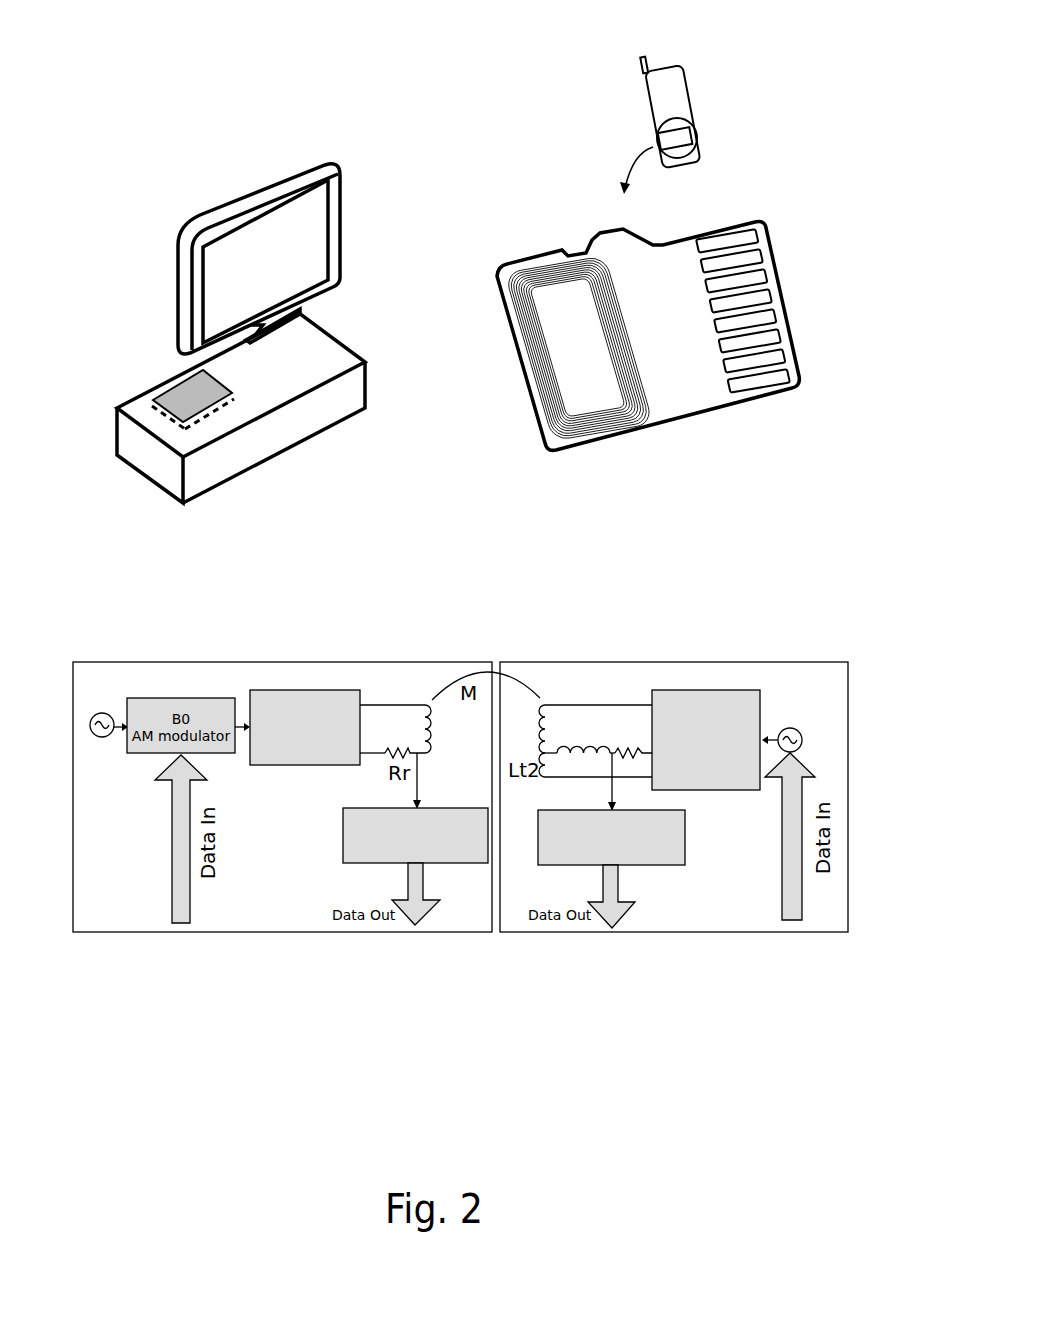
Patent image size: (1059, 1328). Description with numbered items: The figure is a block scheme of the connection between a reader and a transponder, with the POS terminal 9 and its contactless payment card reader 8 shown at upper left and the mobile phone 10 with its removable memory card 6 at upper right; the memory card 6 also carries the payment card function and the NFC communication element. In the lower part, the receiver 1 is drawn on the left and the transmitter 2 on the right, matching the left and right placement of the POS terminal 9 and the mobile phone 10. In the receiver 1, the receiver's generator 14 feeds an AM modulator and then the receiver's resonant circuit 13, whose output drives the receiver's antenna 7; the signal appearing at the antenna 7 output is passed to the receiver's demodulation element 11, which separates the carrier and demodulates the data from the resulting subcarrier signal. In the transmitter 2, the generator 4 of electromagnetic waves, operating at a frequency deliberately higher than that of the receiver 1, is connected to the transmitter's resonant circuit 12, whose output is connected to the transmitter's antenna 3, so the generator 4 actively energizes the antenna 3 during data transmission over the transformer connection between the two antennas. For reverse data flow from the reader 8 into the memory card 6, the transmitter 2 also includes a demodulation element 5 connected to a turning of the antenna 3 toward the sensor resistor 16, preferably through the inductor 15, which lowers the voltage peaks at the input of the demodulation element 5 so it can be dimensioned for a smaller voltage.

The receiver 1 is at (142, 933).
The transmitter 2 is at (547, 933).
The transmitter's antenna 3 is at (541, 700).
The generator of the electromagnetic waves 4 is at (792, 728).
The demodulation element 5 is at (643, 862).
The memory card 6 is at (676, 380).
The receiver's antenna 7 is at (430, 727).
The payment card reader 8 is at (190, 402).
The POS terminal 9 is at (172, 210).
The mobile phone 10 is at (668, 100).
The receiver's demodulation element 11 is at (472, 864).
The transmitter's resonant circuit 12 is at (700, 690).
The receiver's resonant circuit 13 is at (250, 766).
The receiver's generator 14 is at (107, 713).
The inductor 15 is at (580, 748).
The sensor resistor 16 is at (627, 749).